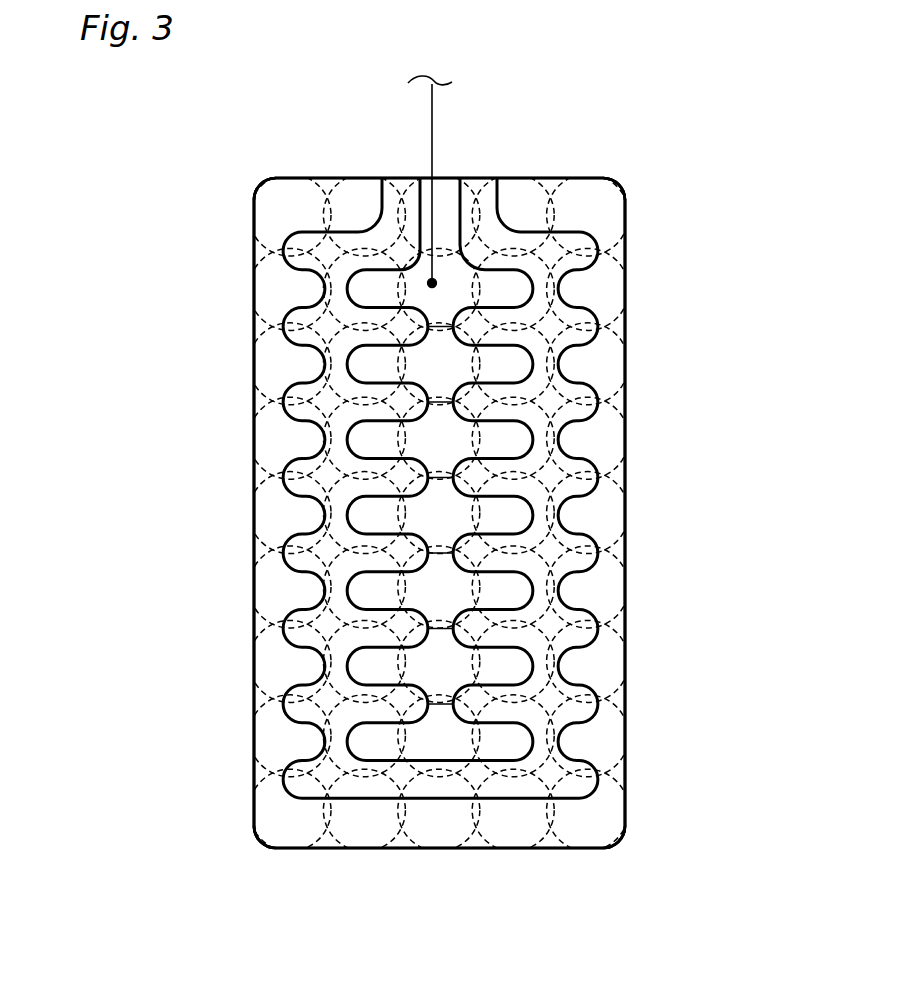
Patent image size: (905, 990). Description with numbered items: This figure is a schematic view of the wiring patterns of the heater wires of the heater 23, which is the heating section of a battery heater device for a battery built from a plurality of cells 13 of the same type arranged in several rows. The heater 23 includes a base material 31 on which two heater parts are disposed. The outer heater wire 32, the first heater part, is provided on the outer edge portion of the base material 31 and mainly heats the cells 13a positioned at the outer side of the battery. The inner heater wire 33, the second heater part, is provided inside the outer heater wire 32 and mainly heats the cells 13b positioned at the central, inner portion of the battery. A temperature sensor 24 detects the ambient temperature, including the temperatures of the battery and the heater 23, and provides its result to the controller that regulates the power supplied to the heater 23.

The cells 13 is at (329, 836).
The cells positioned at an outer side of the battery 13a is at (262, 178).
The cells positioned at a central portion of the battery 13b is at (462, 565).
The heater 23 is at (247, 652).
The temperature sensor 24 is at (434, 281).
The base material 31 is at (254, 328).
The outer heater wire 32 is at (580, 411).
The inner heater wire 33 is at (460, 225).